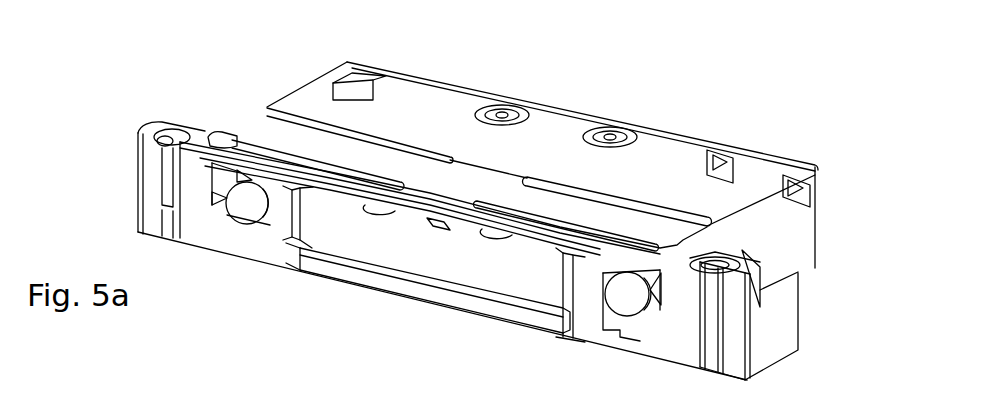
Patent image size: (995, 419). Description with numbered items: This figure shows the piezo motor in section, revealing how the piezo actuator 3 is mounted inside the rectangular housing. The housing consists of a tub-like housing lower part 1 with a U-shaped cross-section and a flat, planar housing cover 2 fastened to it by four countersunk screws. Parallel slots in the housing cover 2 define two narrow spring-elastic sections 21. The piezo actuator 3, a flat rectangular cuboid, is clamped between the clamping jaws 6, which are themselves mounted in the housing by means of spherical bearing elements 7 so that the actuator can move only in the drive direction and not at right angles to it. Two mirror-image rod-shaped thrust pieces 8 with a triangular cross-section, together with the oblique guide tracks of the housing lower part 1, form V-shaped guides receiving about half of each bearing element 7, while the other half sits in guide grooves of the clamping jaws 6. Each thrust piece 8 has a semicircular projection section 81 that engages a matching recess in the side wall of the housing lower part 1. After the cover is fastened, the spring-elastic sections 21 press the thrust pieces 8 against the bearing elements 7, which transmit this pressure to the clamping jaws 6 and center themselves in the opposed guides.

The housing lower part 1 is at (787, 255).
The housing cover 2 is at (663, 157).
The spring-elastic section 21 is at (320, 147).
The piezo actuator 3 is at (403, 247).
The clamping jaw 6 is at (277, 230).
The spherical bearing element 7 is at (247, 210).
The thrust piece 8 is at (223, 177).
The projection section 81 is at (241, 124).